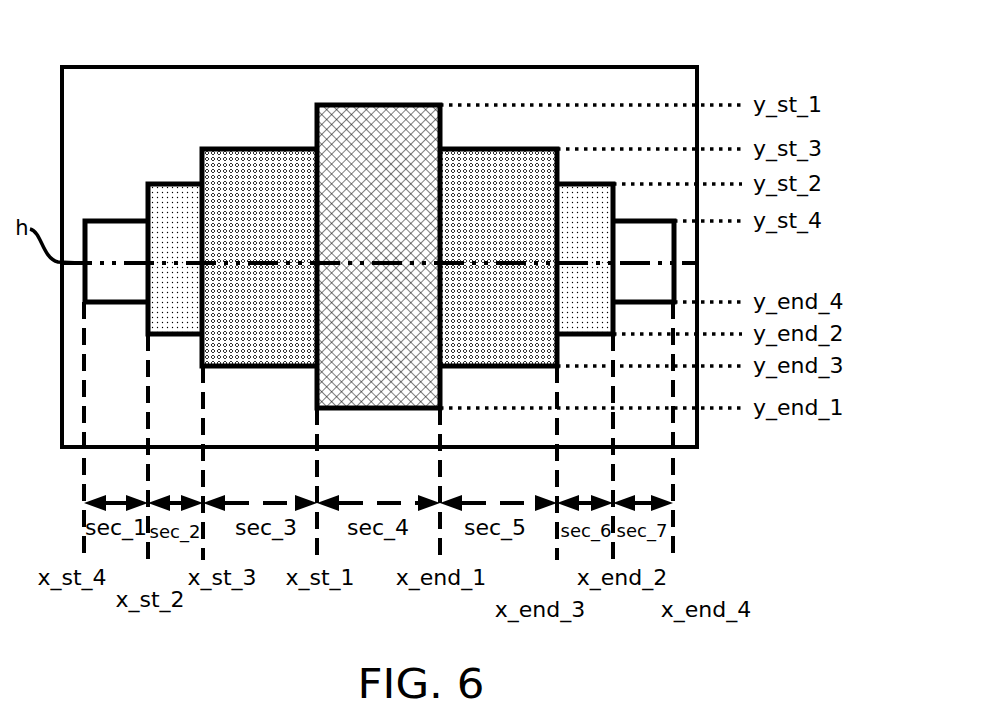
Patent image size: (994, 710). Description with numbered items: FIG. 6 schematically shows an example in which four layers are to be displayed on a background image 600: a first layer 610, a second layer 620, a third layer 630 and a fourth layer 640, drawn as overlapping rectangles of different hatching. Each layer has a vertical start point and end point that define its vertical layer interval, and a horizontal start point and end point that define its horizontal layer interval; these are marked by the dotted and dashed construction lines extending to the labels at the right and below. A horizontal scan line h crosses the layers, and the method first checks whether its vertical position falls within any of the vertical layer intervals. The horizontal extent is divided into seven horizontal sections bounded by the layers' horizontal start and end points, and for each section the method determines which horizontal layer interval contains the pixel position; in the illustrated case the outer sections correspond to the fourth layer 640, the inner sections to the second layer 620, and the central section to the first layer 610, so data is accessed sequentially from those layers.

The background image 600 is at (650, 66).
The first layer 610 is at (384, 125).
The second layer 620 is at (170, 208).
The third layer 630 is at (258, 168).
The fourth layer 640 is at (116, 237).